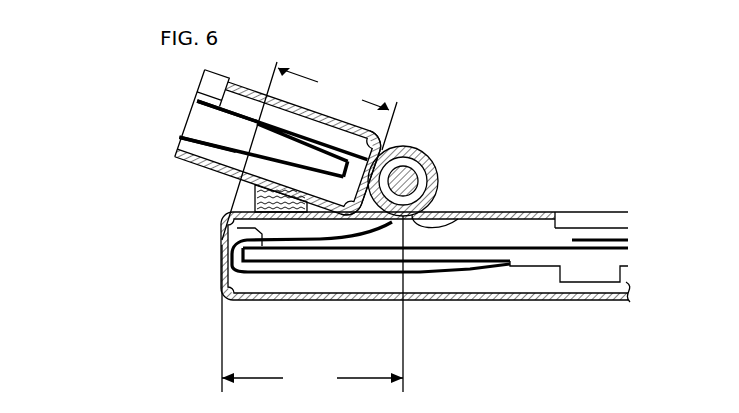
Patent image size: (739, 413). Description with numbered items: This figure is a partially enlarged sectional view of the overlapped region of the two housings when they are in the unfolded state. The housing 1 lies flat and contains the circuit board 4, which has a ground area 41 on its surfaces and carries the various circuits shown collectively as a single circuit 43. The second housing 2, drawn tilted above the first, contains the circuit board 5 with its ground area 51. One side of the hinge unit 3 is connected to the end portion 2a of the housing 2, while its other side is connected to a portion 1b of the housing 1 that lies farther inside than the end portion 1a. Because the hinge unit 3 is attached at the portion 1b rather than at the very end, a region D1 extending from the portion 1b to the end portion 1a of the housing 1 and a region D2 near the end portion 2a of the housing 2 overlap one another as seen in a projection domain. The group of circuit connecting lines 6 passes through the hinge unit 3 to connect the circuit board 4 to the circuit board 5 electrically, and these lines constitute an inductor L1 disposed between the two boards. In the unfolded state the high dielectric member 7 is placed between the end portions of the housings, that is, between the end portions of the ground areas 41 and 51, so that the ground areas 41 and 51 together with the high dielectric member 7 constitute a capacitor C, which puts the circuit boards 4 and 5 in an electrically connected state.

The housing 1 is at (622, 300).
The end portion of housing 1 1a is at (220, 292).
The portion of housing 1 1b is at (465, 212).
The housing 2 is at (181, 151).
The end portion of housing 2 2a is at (383, 140).
The hinge unit 3 is at (435, 162).
The circuit board 4 is at (622, 254).
The ground area 41 is at (235, 229).
The circuit 43 is at (594, 272).
The circuit board 5 is at (205, 113).
The ground area 51 is at (203, 127).
The group of circuit connecting lines 6 is at (470, 273).
The high dielectric member 7 is at (255, 203).
The capacitor C is at (123, 208).
The region D1 is at (312, 306).
The region D2 is at (309, 151).
The inductor L1 is at (459, 368).